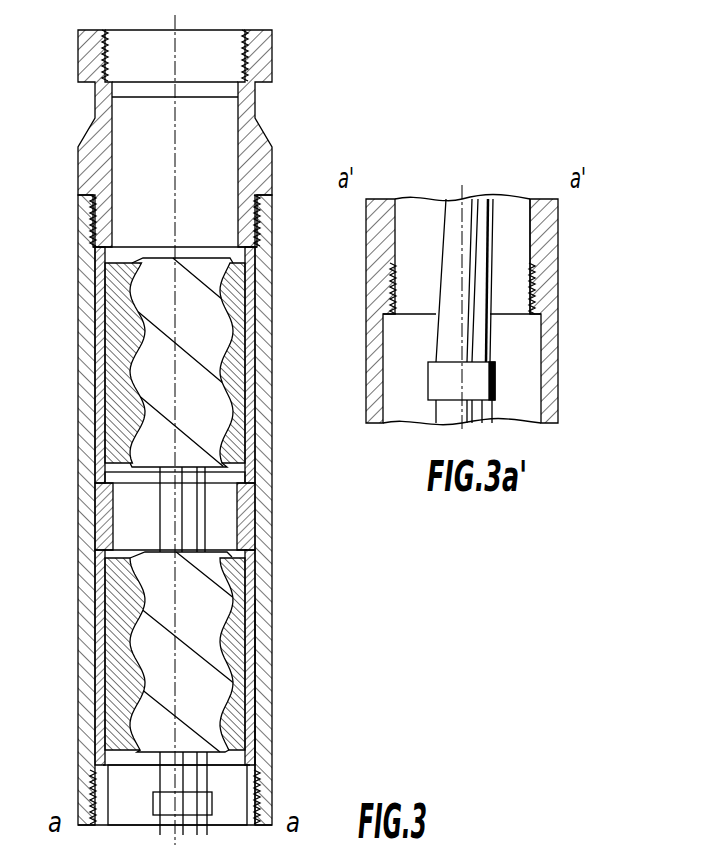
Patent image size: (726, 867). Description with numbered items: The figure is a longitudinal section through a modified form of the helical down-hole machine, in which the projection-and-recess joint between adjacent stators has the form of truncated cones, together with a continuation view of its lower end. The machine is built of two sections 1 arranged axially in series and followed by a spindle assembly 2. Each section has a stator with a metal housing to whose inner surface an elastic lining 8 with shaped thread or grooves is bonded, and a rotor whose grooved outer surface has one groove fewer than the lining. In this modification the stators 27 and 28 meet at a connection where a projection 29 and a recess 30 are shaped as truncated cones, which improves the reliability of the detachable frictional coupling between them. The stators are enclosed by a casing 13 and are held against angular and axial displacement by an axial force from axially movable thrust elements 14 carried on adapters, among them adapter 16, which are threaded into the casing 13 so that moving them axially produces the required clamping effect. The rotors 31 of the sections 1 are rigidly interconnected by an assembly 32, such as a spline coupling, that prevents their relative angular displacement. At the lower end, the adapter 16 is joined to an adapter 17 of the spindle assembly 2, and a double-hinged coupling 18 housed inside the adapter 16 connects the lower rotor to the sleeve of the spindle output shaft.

In FIG. 3, the section 1 is at (272, 556).
In FIG. 3a', the spindle assembly 2 is at (560, 401).
In FIG. 3, the elastic lining 8 is at (242, 353).
In FIG. 3, the casing 13 is at (262, 728).
In FIG. 3, the thrust element 14 is at (263, 157).
In FIG. 3a', the adapter 16 is at (560, 235).
In FIG. 3a', the adapter of the spindle assembly 17 is at (548, 320).
In FIG. 3a', the double-hinged coupling 18 is at (478, 215).
In FIG. 3, the stator 27 is at (262, 389).
In FIG. 3, the stator 28 is at (256, 598).
In FIG. 3, the projection 29 is at (258, 520).
In FIG. 3, the recess 30 is at (248, 480).
In FIG. 3, the rotor 31 is at (195, 268).
In FIG. 3, the assembly 32 is at (165, 530).